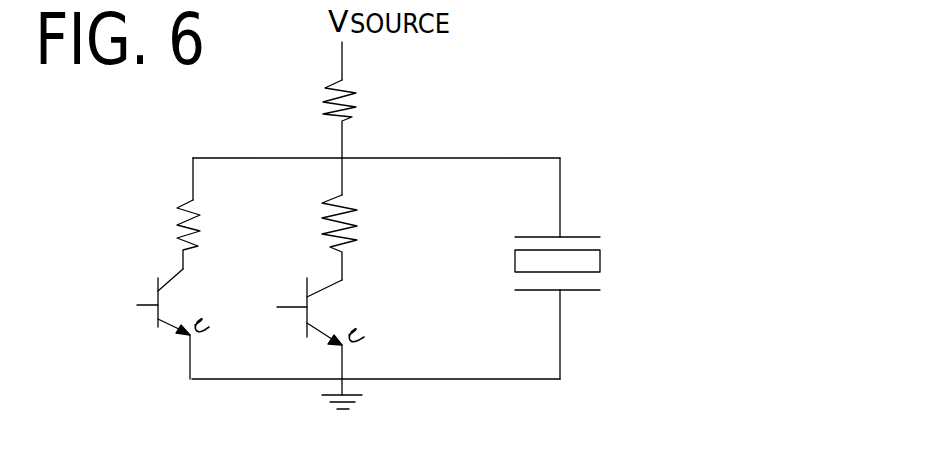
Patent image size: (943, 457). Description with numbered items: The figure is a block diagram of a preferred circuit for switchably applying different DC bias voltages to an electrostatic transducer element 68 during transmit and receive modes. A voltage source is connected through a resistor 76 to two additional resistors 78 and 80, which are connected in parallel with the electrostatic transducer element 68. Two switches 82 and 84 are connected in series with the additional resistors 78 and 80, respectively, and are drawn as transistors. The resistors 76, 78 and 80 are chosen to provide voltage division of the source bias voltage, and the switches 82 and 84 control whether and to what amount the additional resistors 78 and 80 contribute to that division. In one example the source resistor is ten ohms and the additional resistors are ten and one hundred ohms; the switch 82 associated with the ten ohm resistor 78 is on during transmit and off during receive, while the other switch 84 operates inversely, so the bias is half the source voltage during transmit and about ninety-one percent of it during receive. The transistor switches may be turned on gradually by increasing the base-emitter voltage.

The electrostatic transducer element 68 is at (615, 247).
The resistor 76 is at (362, 107).
The additional resistor 78 is at (362, 223).
The additional resistor 80 is at (213, 217).
The switch 82 is at (352, 303).
The switch 84 is at (147, 267).